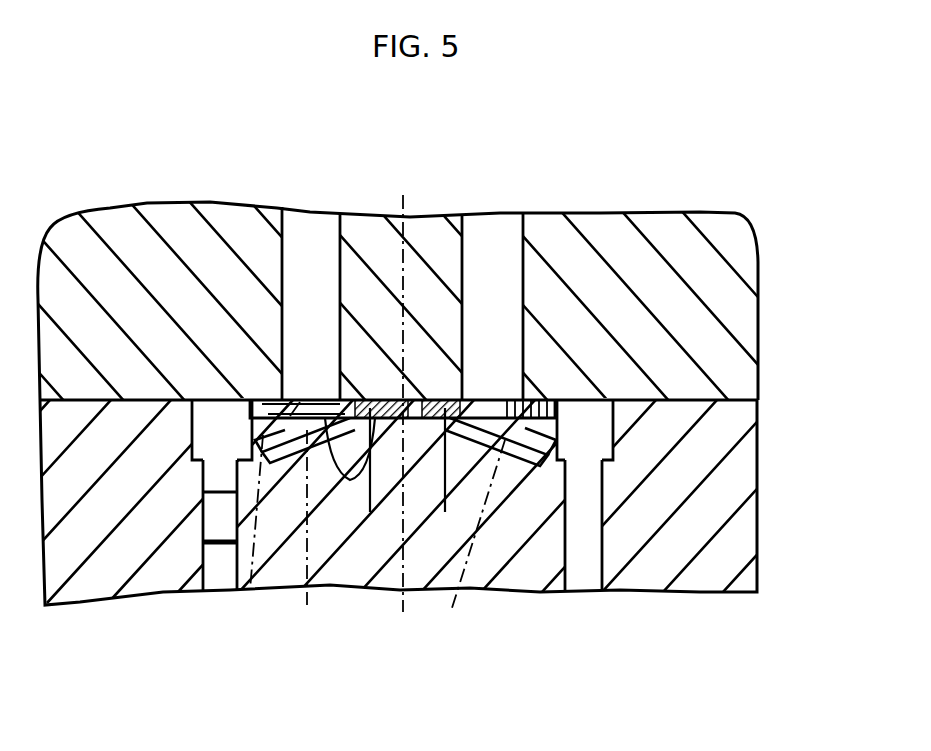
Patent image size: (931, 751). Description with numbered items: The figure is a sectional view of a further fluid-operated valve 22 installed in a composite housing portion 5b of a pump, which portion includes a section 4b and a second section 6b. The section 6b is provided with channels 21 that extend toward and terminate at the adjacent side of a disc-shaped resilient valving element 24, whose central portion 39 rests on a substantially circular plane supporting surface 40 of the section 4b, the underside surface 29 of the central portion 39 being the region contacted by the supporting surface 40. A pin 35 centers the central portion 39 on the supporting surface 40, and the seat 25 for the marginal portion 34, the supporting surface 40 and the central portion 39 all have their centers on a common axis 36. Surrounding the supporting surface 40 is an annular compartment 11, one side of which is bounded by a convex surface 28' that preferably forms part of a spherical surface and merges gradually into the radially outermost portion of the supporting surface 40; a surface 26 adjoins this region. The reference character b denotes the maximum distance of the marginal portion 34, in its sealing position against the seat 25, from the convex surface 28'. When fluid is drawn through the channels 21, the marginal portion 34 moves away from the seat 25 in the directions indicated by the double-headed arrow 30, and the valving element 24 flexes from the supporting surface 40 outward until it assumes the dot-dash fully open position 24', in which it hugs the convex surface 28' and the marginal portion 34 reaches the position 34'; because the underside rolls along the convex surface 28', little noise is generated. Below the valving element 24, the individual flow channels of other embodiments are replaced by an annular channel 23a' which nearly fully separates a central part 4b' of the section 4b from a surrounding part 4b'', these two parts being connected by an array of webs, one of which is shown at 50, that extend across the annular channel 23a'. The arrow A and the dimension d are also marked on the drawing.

The second section 6b is at (716, 227).
The section 4b is at (454, 520).
The central part 4b' is at (501, 651).
The surrounding part 4b'' is at (784, 506).
The composite housing portion 5b is at (759, 398).
The channels 21 is at (300, 220).
The convex surface 28' is at (242, 279).
The marginal portion 34 is at (168, 278).
The central portion 39 is at (370, 395).
The axis 36 is at (402, 212).
The pin 35 is at (419, 384).
The first valve 22 is at (414, 398).
The surface 29 is at (320, 415).
The supporting surface 40 is at (436, 398).
The valving element 24 is at (583, 283).
The annular compartment 11 is at (605, 426).
The surface 26 is at (138, 410).
The seat 25 is at (194, 462).
The annular channel 23a' is at (398, 543).
The marginal portion position 34' is at (241, 546).
The fully open position 24' is at (399, 543).
The double-headed arrow 30 is at (590, 462).
The web 50 is at (218, 520).
The direction arrow A is at (328, 272).
The maximum distance b is at (540, 475).
The gap width d is at (332, 502).